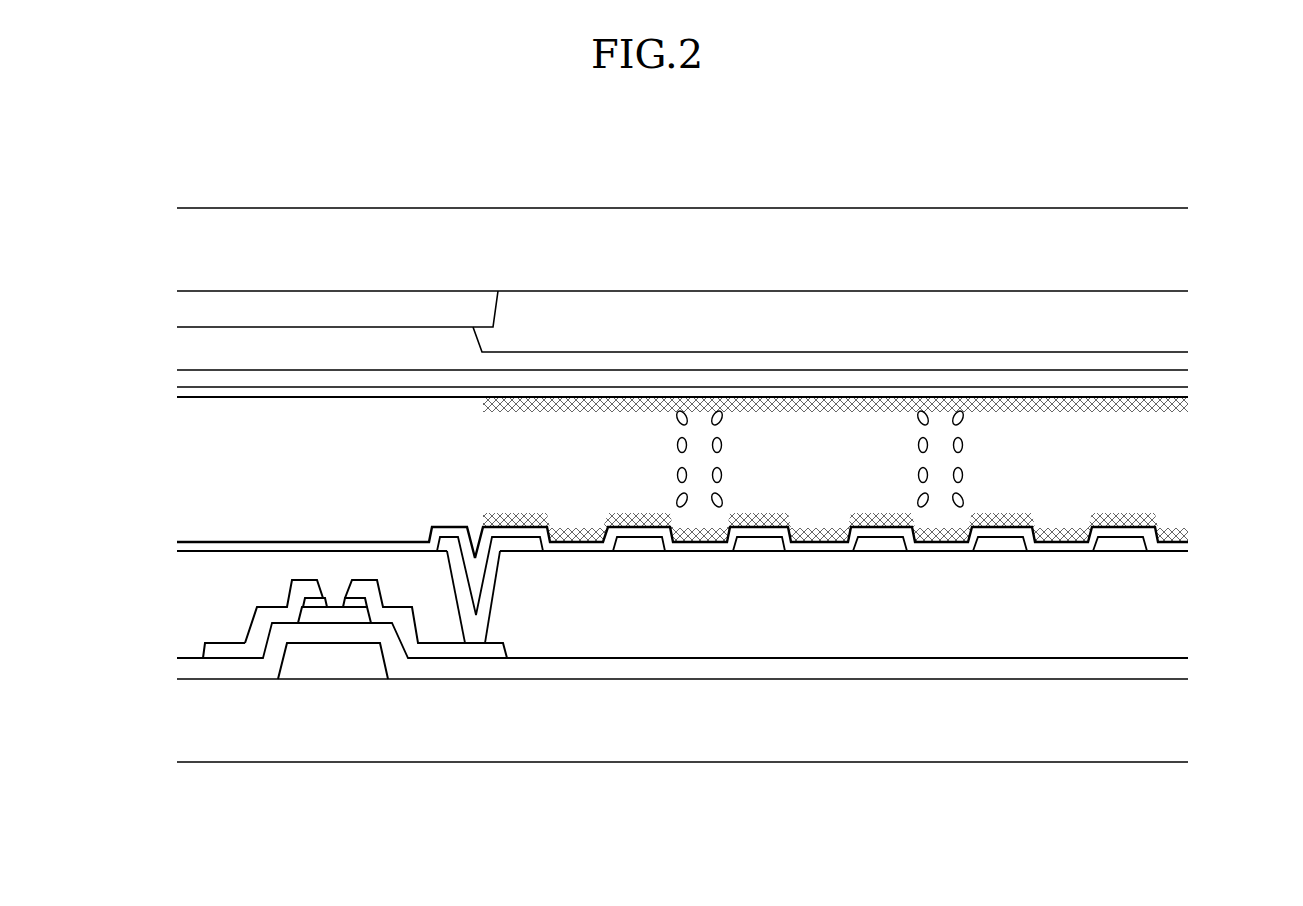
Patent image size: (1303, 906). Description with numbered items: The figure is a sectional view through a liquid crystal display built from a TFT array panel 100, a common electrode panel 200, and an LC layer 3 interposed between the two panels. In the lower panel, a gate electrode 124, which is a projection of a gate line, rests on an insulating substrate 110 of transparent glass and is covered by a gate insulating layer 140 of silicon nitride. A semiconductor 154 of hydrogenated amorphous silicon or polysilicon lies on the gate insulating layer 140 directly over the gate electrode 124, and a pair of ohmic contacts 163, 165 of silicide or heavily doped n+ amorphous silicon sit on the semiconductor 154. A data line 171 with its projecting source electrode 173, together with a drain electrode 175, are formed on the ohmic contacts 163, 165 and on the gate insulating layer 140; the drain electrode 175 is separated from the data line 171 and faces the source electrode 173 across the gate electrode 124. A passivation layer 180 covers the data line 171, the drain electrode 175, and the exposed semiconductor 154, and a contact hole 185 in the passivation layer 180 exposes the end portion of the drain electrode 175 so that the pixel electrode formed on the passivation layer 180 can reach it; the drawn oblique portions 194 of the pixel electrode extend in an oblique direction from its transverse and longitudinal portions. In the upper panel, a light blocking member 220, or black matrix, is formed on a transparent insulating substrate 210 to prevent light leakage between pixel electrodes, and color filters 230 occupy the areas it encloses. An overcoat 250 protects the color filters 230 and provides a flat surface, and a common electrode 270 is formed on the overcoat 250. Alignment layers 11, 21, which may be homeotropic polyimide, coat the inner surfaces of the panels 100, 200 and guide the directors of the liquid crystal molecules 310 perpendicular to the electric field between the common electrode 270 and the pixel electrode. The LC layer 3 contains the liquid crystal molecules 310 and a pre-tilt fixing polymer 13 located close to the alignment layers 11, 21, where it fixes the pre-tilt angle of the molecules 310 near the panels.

The common electrode panel 200 is at (670, 288).
The insulating substrate 210 is at (662, 243).
The light blocking member 220 is at (422, 308).
The color filter 230 is at (818, 325).
The overcoat 250 is at (280, 352).
The common electrode 270 is at (990, 378).
The alignment layer 21 is at (1183, 397).
The LC layer 3 is at (657, 470).
The liquid crystal molecules 310 is at (929, 472).
The pre-tilt fixing polymer 13 is at (1166, 410).
The TFT array panel 100 is at (670, 645).
The insulating substrate 110 is at (683, 728).
The gate electrode 124 is at (310, 665).
The gate insulating layer 140 is at (757, 672).
The semiconductor 154 is at (352, 617).
The ohmic contact 163 is at (313, 600).
The ohmic contact 165 is at (353, 600).
The data line 171 is at (215, 650).
The source electrode 173 is at (248, 650).
The drain electrode 175 is at (488, 653).
The passivation layer 180 is at (682, 645).
The contact hole 185 is at (453, 567).
The oblique portion 194 is at (522, 548).
The alignment layer 11 is at (1183, 545).